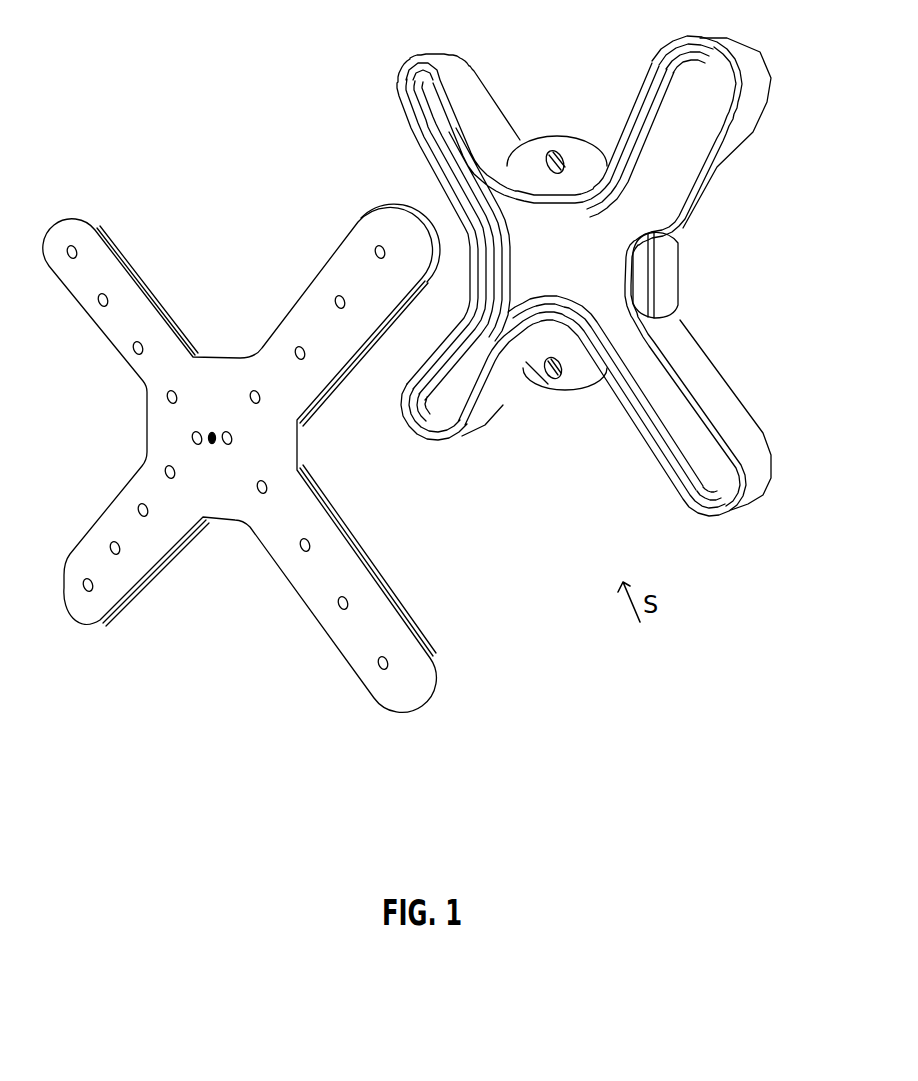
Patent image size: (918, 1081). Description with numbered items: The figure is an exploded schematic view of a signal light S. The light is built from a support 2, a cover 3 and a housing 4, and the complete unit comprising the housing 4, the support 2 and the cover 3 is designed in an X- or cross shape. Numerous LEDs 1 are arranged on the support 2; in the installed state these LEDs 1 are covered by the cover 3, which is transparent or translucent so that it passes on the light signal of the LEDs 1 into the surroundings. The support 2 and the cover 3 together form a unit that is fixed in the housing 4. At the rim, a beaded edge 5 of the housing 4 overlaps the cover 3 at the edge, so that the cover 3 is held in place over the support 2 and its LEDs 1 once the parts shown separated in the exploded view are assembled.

The LEDs 1 is at (104, 297).
The support 2 is at (162, 307).
The cover 3 is at (208, 380).
The housing 4 is at (582, 152).
The beaded edge 5 is at (408, 62).